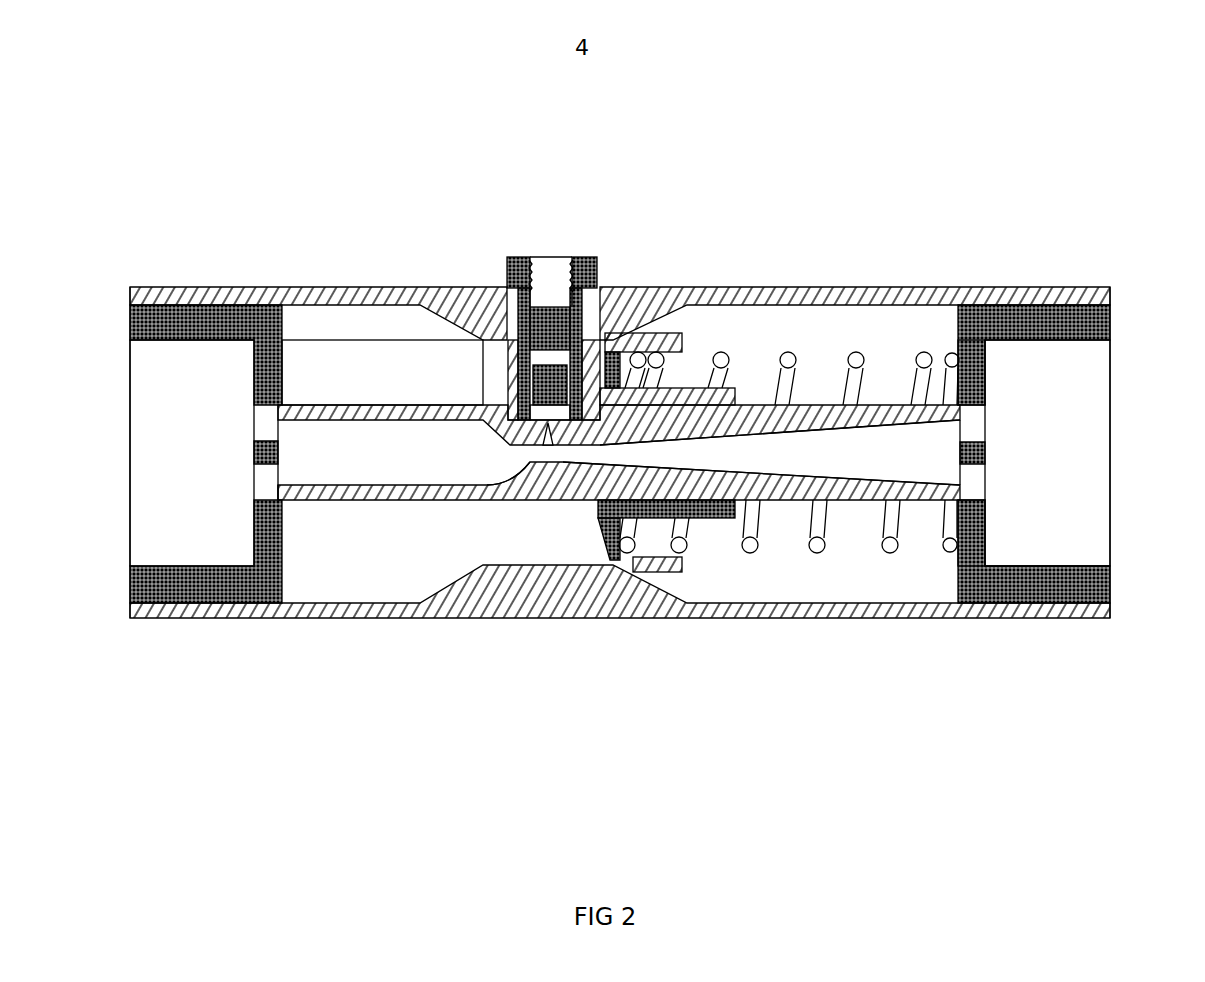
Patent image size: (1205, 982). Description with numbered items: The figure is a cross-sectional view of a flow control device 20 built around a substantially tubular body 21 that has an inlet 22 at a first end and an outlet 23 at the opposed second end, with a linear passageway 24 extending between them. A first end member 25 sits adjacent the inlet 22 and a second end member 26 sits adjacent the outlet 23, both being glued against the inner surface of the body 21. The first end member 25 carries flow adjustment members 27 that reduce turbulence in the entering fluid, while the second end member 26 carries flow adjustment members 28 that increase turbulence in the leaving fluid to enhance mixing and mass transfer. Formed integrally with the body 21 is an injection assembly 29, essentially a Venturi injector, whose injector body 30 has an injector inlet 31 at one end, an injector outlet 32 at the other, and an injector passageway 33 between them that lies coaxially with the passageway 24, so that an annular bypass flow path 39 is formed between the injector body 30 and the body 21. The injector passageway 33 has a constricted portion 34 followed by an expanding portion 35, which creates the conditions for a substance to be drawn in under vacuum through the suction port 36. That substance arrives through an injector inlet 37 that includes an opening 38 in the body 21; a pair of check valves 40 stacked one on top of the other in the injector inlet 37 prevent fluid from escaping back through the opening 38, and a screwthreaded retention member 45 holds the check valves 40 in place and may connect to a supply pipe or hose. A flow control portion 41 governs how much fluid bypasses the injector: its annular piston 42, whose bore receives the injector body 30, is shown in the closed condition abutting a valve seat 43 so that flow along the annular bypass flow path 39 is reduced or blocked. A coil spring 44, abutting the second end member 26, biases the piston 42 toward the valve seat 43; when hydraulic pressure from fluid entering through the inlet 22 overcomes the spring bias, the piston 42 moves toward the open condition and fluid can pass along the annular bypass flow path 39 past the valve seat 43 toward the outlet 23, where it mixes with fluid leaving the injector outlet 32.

The flow control device 20 is at (950, 220).
The tubular body 21 is at (378, 289).
The inlet 22 is at (158, 372).
The outlet 23 is at (1105, 352).
The linear passageway 24 is at (1032, 530).
The first end member 25 is at (228, 585).
The second end member 26 is at (1022, 578).
The flow adjustment members 27 is at (277, 355).
The flow adjustment members 28 is at (978, 515).
The injection assembly 29 is at (593, 350).
The injector body 30 is at (380, 495).
The injector inlet 31 is at (272, 477).
The injector outlet 32 is at (935, 455).
The injector passageway 33 is at (338, 440).
The constricted portion 34 is at (523, 477).
The expanding portion 35 is at (735, 455).
The suction port 36 is at (548, 437).
The injector inlet 37 is at (563, 267).
The opening 38 is at (547, 257).
The annular bypass flow path 39 is at (313, 327).
The check valves 40 is at (548, 385).
The flow control portion 41 is at (735, 333).
The piston 42 is at (652, 563).
The valve seat 43 is at (617, 573).
The coil spring 44 is at (885, 547).
The retention member 45 is at (583, 257).